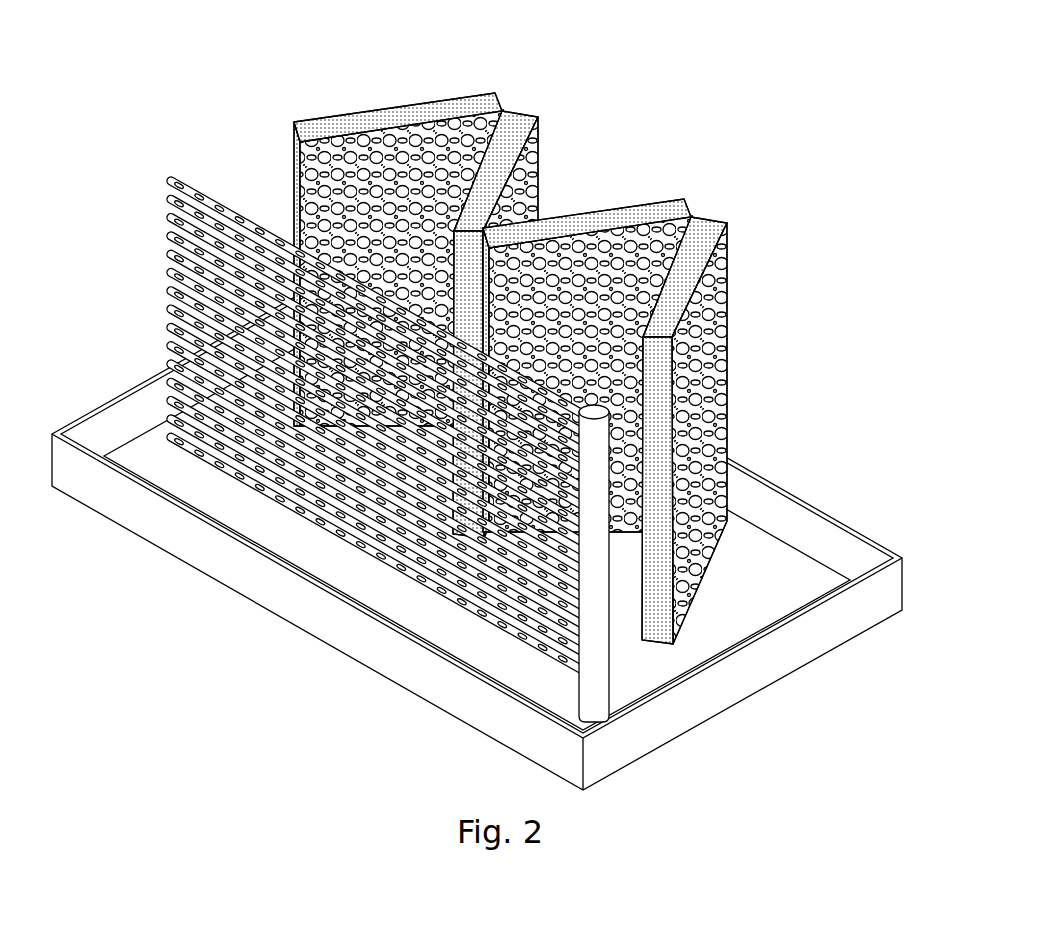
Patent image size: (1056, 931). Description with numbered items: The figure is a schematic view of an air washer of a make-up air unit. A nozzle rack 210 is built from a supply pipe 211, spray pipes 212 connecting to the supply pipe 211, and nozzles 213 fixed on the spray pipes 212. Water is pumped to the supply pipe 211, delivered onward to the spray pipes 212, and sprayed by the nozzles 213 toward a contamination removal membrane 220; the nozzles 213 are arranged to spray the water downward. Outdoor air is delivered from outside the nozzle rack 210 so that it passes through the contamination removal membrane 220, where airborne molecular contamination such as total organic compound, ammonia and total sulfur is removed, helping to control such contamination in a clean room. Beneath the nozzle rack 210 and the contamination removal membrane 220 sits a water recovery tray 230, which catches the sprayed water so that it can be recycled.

The nozzle rack 210 is at (376, 381).
The supply pipe 211 is at (592, 693).
The spray pipes 212 is at (528, 383).
The nozzles 213 is at (260, 223).
The contamination removal membrane 220 is at (401, 104).
The water recovery tray 230 is at (883, 597).